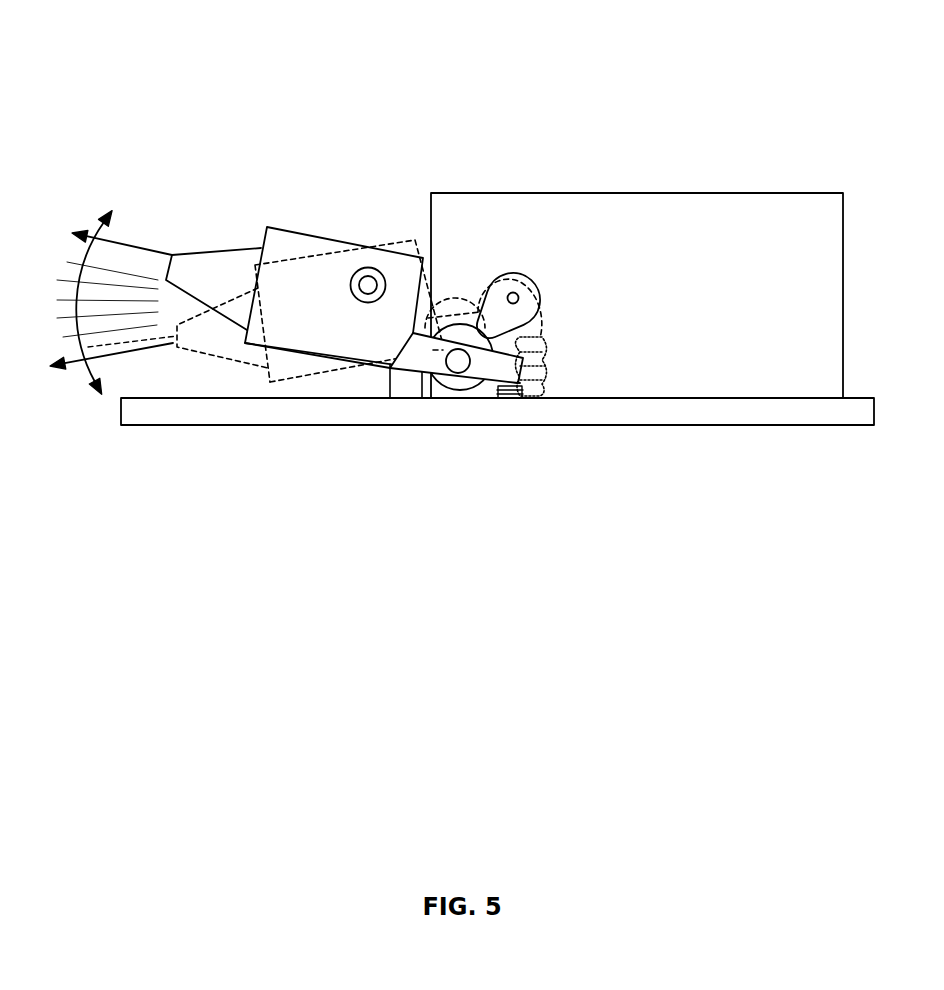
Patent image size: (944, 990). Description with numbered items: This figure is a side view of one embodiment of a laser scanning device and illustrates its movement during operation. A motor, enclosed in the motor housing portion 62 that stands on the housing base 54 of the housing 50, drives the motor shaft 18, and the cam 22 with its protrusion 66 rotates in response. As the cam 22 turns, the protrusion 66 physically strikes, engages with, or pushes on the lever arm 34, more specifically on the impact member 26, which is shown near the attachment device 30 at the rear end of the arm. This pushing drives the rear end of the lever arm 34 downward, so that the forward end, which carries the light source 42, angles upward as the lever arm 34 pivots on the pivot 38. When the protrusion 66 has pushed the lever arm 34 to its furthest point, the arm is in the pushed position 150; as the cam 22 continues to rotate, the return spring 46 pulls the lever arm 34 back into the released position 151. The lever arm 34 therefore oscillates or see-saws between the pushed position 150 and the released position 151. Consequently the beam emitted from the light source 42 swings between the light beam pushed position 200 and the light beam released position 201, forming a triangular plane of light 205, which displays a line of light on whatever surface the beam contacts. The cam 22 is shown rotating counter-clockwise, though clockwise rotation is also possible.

The motor shaft 18 is at (518, 297).
The cam 22 is at (527, 312).
The impact member 26 is at (453, 388).
The attachment device 30 is at (458, 362).
The lever arm 34 is at (295, 233).
The pivot 38 is at (370, 267).
The light source 42 is at (212, 260).
The return spring 46 is at (538, 356).
The housing 50 is at (403, 388).
The housing base 54 is at (163, 415).
The motor housing portion 62 is at (767, 218).
The protrusion 66 is at (485, 325).
The pushed position 150 is at (330, 238).
The released position 151 is at (287, 380).
The light beam pushed position 200 is at (107, 253).
The light beam released position 201 is at (117, 348).
The triangular plane of light 205 is at (128, 278).